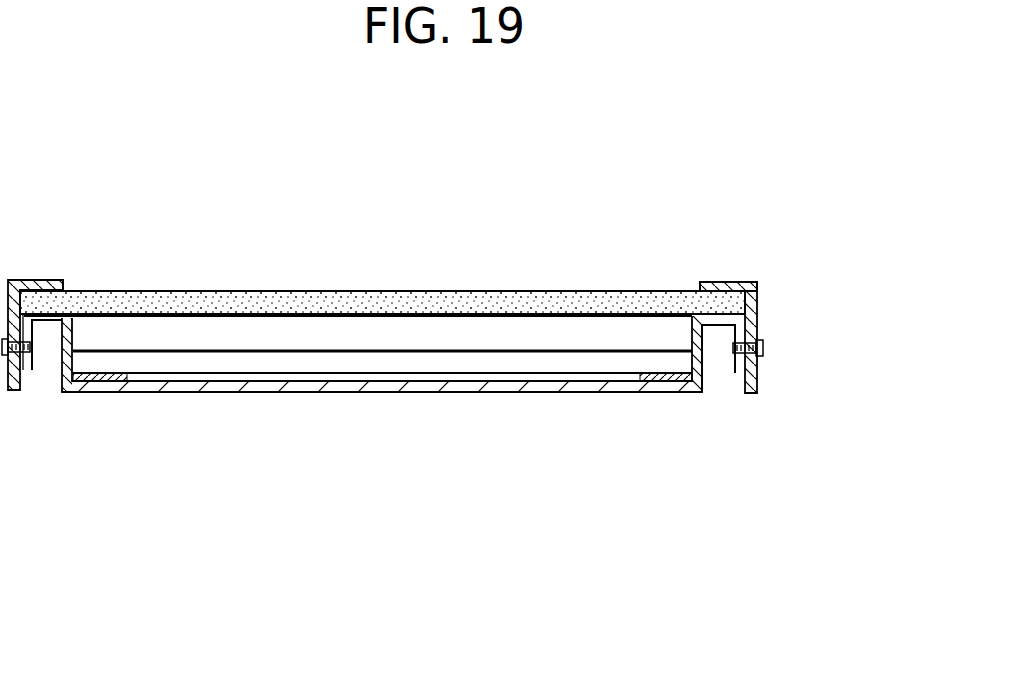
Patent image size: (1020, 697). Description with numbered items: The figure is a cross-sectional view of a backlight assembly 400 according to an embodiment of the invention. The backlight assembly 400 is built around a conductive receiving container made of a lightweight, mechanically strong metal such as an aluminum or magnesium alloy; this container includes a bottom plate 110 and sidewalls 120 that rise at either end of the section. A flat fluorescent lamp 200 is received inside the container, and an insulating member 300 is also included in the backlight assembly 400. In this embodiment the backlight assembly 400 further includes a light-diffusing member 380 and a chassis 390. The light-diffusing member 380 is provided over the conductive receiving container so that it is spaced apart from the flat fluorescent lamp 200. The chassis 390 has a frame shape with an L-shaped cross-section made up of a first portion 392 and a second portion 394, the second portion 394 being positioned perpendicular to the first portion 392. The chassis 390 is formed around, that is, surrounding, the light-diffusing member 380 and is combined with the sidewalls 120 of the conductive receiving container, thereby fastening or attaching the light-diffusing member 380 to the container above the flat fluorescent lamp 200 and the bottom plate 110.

The bottom plate 110 is at (650, 392).
The sidewalls 120 is at (708, 360).
The flat fluorescent lamp 200 is at (224, 354).
The insulating member 300 is at (92, 381).
The light-diffusing member 380 is at (370, 300).
The chassis 390 is at (719, 274).
The first portion 392 is at (739, 283).
The second portion 394 is at (763, 330).
The backlight assembly 400 is at (549, 259).